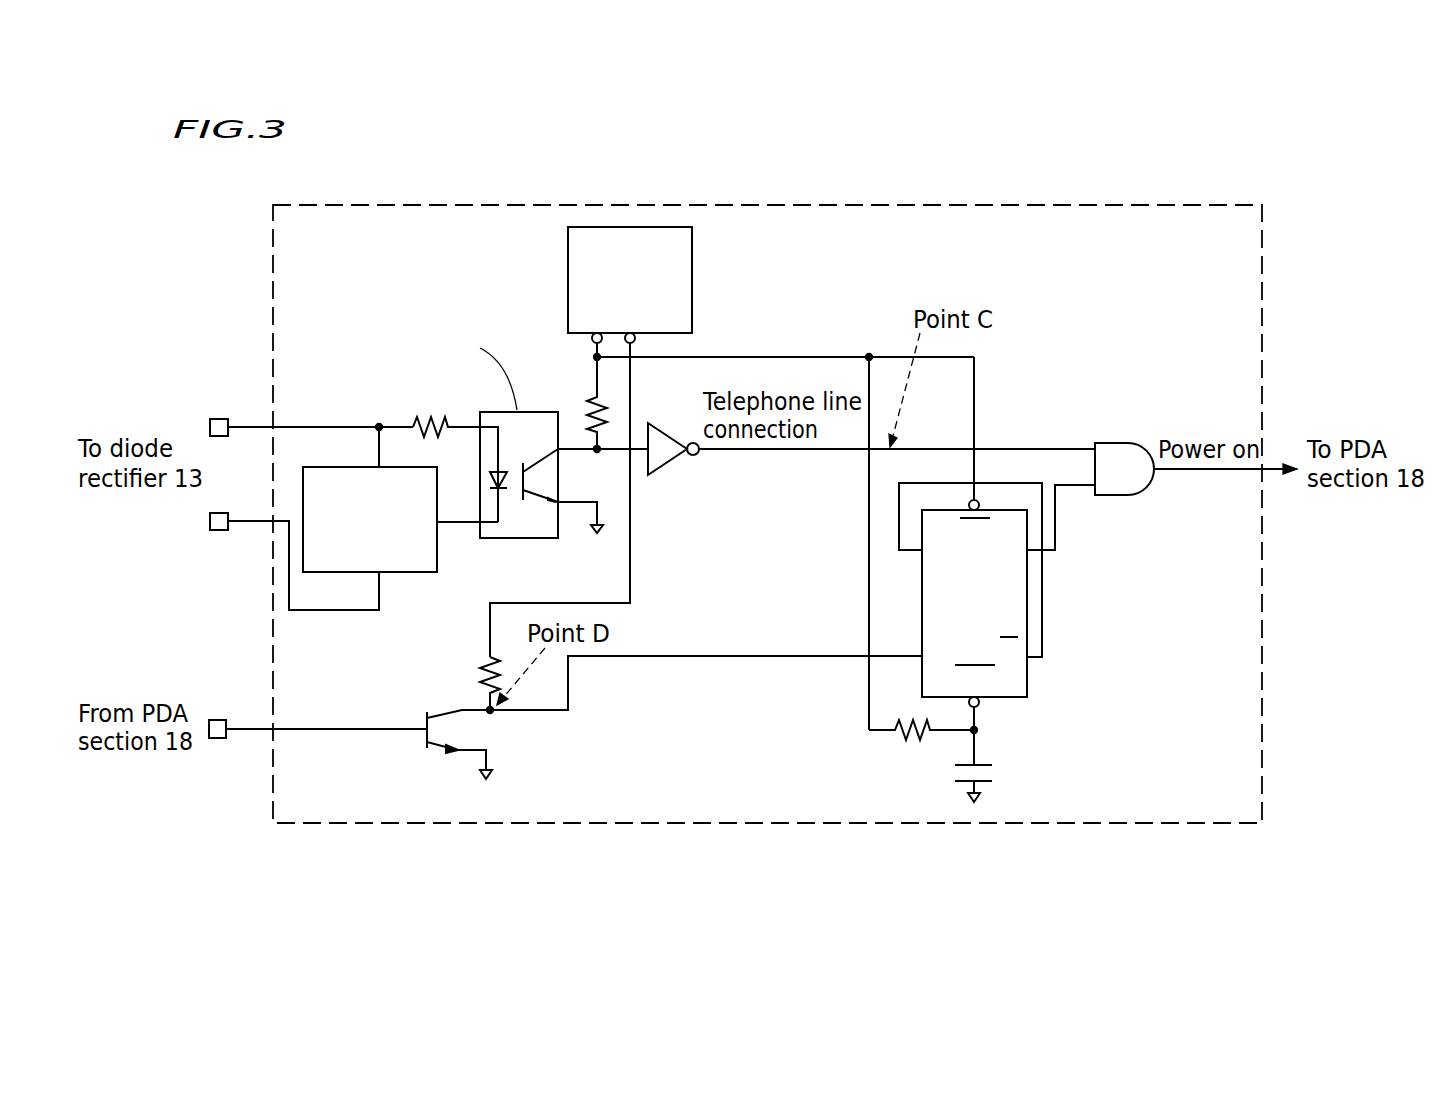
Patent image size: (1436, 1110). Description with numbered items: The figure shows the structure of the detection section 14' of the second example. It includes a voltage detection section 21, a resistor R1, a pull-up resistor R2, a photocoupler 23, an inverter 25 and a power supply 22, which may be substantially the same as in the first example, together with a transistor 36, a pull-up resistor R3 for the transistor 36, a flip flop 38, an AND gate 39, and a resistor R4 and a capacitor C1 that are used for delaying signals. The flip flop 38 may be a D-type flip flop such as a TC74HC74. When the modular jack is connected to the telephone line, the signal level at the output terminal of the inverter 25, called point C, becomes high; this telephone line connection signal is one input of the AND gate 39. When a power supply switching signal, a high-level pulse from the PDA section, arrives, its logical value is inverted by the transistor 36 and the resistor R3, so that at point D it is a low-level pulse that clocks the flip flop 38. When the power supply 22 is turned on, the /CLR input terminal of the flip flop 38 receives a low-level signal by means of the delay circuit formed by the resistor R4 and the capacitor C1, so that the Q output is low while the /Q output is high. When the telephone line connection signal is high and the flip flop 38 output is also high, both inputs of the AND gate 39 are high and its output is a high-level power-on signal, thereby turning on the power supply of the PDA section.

The detection section 14' is at (767, 478).
The voltage detection section 21 is at (315, 467).
The power supply 22 is at (657, 227).
The photocoupler 23 is at (515, 538).
The inverter 25 is at (667, 463).
The transistor 36 is at (420, 720).
The flip flop 38 is at (1012, 510).
The AND gate 39 is at (1120, 443).
The resistor R1 is at (455, 449).
The pull-up resistor R2 is at (582, 405).
The pull-up resistor R3 is at (470, 685).
The resistor R4 is at (923, 714).
The capacitor C1 is at (994, 754).